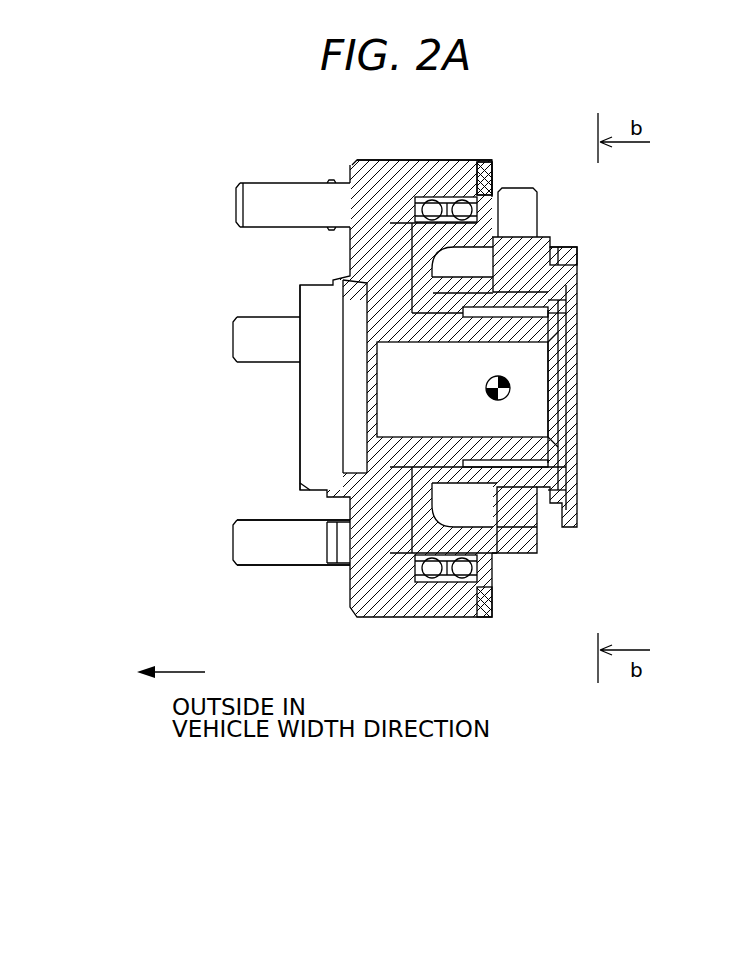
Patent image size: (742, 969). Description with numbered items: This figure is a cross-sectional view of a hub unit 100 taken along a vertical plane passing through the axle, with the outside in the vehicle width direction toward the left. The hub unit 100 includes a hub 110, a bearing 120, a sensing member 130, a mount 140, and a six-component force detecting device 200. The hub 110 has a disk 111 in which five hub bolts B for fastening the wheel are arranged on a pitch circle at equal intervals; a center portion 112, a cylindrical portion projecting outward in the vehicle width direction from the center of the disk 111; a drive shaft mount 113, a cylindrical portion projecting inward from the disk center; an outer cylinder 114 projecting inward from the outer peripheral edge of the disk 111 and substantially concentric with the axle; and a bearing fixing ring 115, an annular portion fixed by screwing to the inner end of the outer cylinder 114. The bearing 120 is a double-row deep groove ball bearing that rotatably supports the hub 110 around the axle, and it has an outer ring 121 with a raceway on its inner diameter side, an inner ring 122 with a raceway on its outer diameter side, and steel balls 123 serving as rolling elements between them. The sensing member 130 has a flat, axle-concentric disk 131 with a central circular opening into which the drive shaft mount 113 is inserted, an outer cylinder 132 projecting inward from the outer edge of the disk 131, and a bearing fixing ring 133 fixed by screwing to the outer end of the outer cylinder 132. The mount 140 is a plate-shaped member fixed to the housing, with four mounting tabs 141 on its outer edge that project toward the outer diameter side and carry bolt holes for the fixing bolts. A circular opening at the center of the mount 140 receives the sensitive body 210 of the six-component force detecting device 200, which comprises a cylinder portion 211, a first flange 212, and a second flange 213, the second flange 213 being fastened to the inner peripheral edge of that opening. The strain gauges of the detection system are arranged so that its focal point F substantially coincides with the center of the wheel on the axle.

The hub unit 100 is at (186, 124).
The hub 110 is at (329, 612).
The disk 111 is at (350, 265).
The center portion 112 is at (300, 483).
The drive shaft mount 113 is at (400, 440).
The outer cylinder 114 is at (385, 160).
The bearing fixing ring 115 is at (492, 161).
The bearing 120 is at (568, 372).
The outer ring 121 is at (477, 196).
The inner ring 122 is at (472, 220).
The steel balls 123 is at (465, 210).
The sensing member 130 is at (276, 355).
The disk 131 is at (457, 230).
The outer cylinder 132 is at (397, 222).
The bearing fixing ring 133 is at (413, 275).
The mount 140 is at (532, 515).
The mounting tabs 141 is at (515, 188).
The six-component force detecting device 200 is at (576, 395).
The sensitive body 210 is at (534, 395).
The cylinder portion 211 is at (446, 295).
The first flange 212 is at (505, 302).
The second flange 213 is at (558, 253).
The hub bolts B is at (240, 555).
The focal point F is at (482, 386).